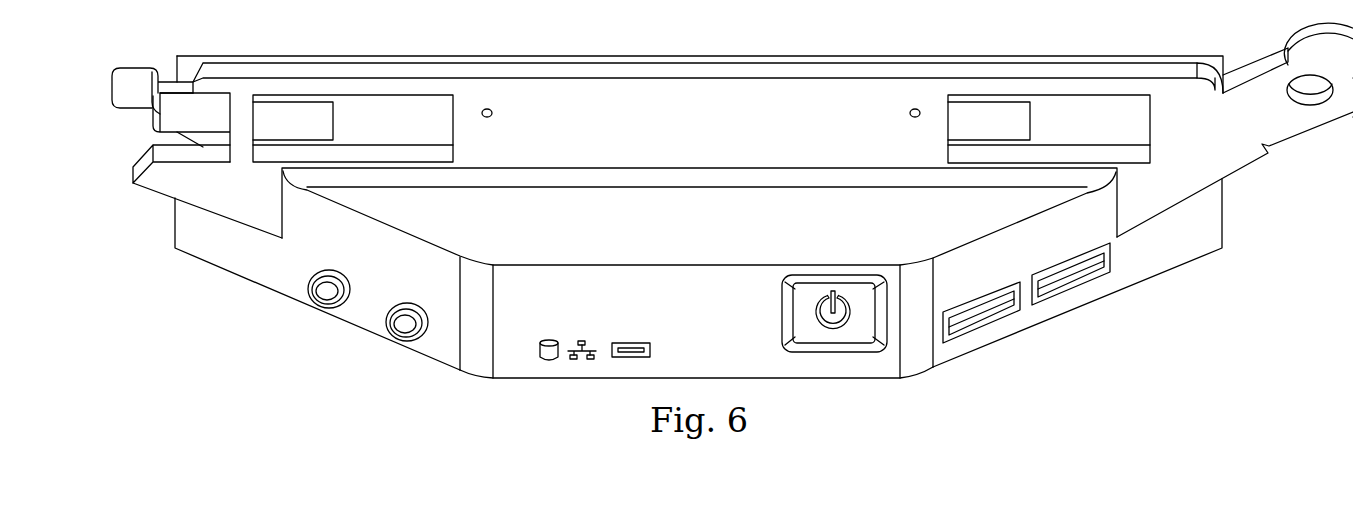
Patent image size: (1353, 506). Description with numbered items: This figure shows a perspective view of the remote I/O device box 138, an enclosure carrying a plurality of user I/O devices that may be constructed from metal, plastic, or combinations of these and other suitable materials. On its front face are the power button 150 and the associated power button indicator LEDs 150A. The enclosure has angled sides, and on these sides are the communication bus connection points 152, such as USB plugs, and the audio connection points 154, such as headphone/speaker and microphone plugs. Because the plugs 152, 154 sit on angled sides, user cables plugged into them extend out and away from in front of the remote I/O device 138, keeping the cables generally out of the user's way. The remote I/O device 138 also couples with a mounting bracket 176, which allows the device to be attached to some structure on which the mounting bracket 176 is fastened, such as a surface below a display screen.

The remote I/O device box 138 is at (170, 226).
The mounting bracket 176 is at (99, 63).
The audio connection points 154 is at (280, 316).
The power button indicator LEDs 150A is at (749, 321).
The power button 150 is at (833, 278).
The communication bus connection points 152 is at (1116, 325).